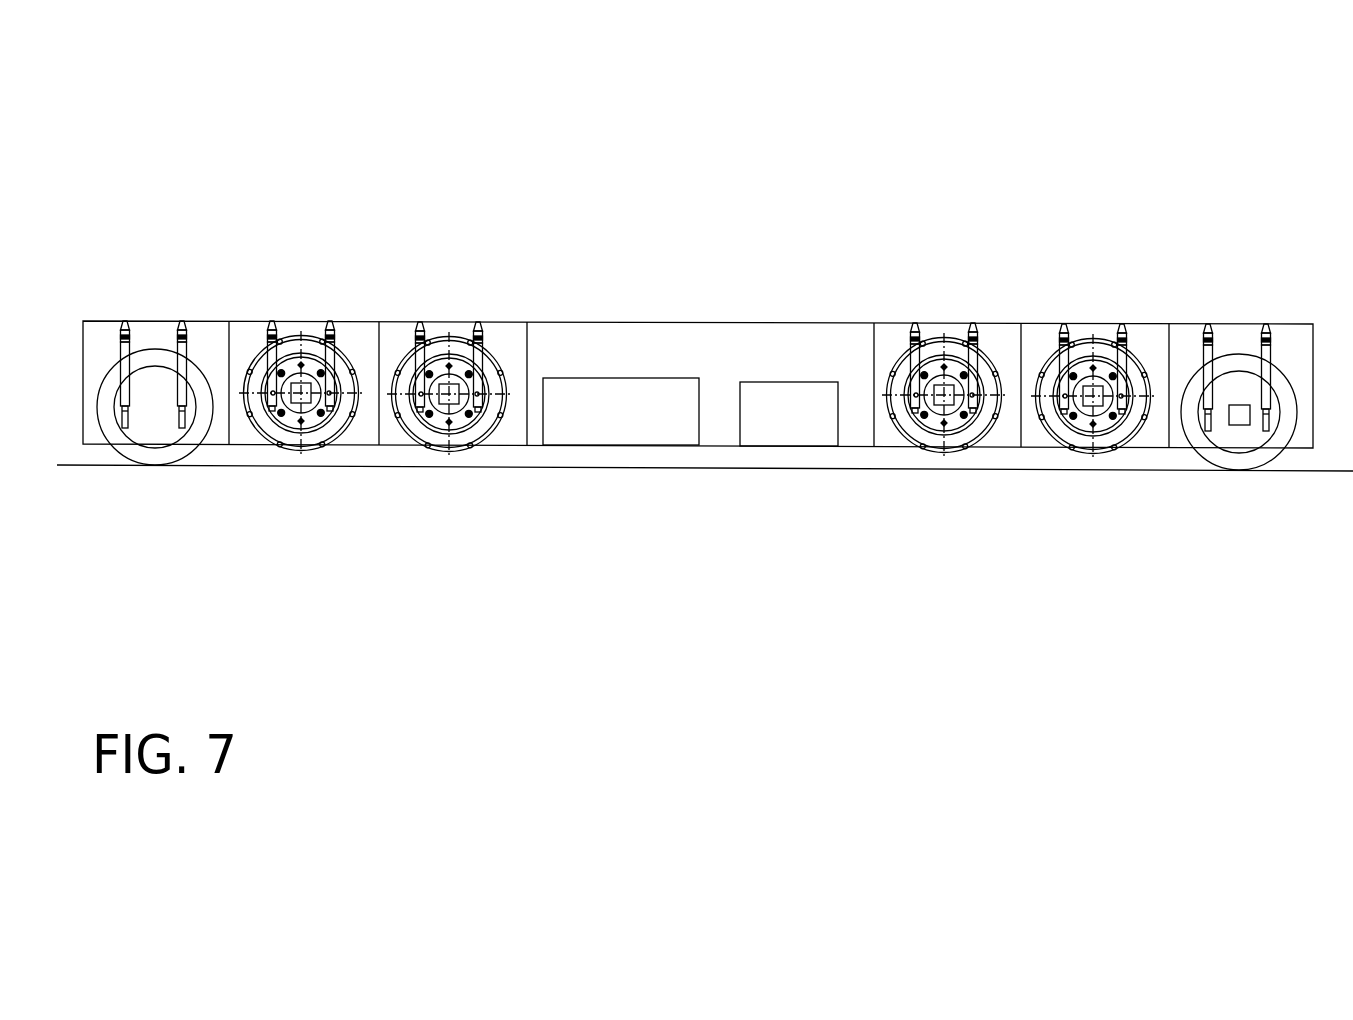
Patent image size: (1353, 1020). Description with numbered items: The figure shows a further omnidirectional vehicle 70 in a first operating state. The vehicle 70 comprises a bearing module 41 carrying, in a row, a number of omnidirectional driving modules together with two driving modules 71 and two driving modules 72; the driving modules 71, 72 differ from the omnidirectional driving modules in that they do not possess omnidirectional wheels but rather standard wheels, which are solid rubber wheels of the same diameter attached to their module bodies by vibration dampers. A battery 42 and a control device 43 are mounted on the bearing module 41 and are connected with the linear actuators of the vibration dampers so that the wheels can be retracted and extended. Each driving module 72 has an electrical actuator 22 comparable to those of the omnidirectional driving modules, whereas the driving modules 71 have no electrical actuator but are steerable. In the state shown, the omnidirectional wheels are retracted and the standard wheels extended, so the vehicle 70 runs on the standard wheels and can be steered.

The omnidirectional vehicle 70 is at (213, 181).
The driving module 71 is at (105, 334).
The driving module 72 is at (1186, 350).
The electrical actuator 22 is at (1240, 420).
The bearing module 41 is at (674, 348).
The battery 42 is at (611, 427).
The control device 43 is at (788, 423).